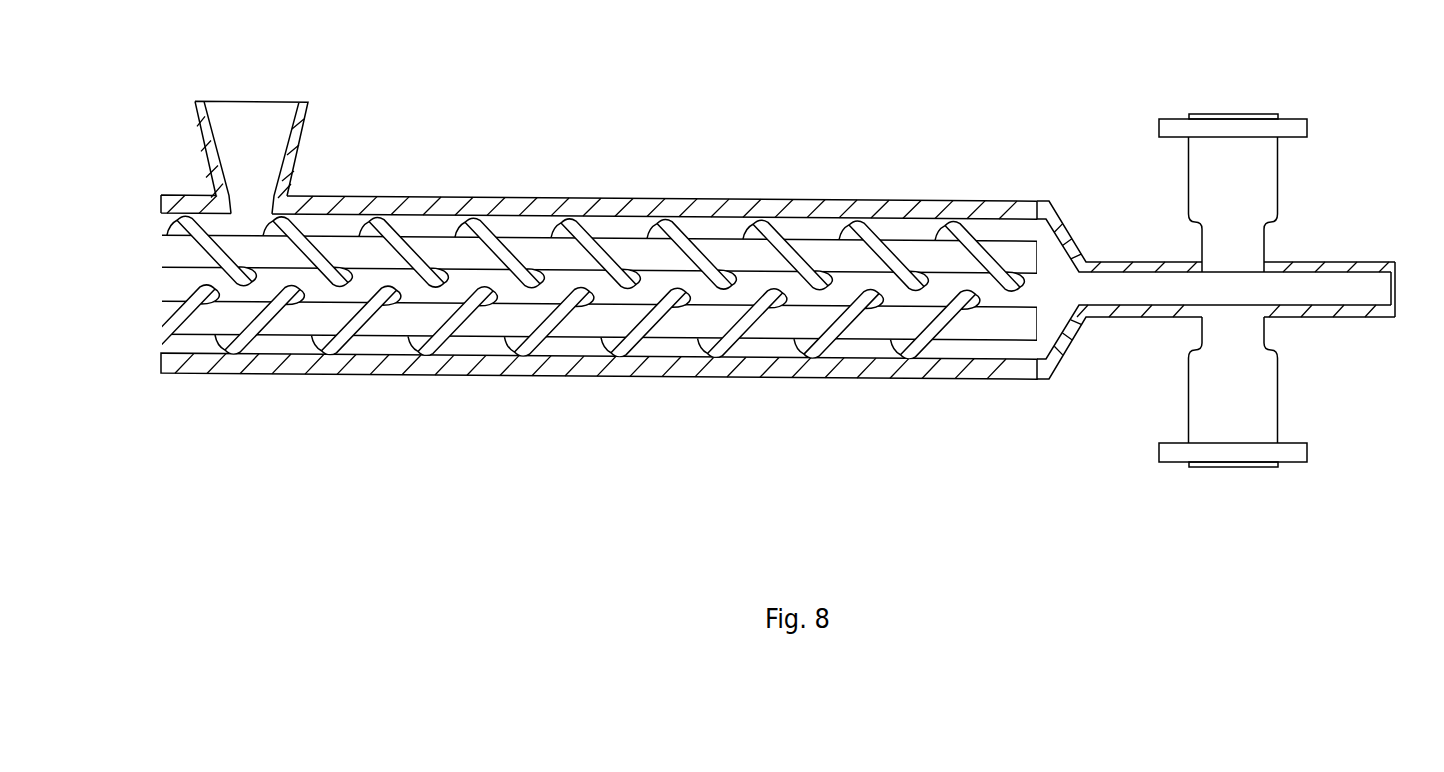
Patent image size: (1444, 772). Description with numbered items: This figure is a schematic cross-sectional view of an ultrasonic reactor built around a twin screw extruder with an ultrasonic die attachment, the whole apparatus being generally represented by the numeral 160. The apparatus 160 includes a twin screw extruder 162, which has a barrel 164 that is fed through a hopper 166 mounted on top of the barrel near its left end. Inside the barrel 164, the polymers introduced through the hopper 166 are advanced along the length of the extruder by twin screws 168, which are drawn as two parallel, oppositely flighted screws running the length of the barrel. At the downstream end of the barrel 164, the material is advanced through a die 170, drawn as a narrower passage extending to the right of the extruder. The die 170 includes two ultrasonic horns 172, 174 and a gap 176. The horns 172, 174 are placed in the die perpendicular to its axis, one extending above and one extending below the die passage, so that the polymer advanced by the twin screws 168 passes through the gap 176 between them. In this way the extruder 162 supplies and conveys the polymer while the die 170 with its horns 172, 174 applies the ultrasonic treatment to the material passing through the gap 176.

The apparatus 160 is at (730, 177).
The twin screw extruder 162 is at (570, 343).
The barrel 164 is at (510, 207).
The hopper 166 is at (273, 148).
The twin screws 168 is at (397, 322).
The die 170 is at (1350, 275).
The horn 172 is at (1237, 373).
The horn 174 is at (1232, 242).
The gap 176 is at (1232, 287).